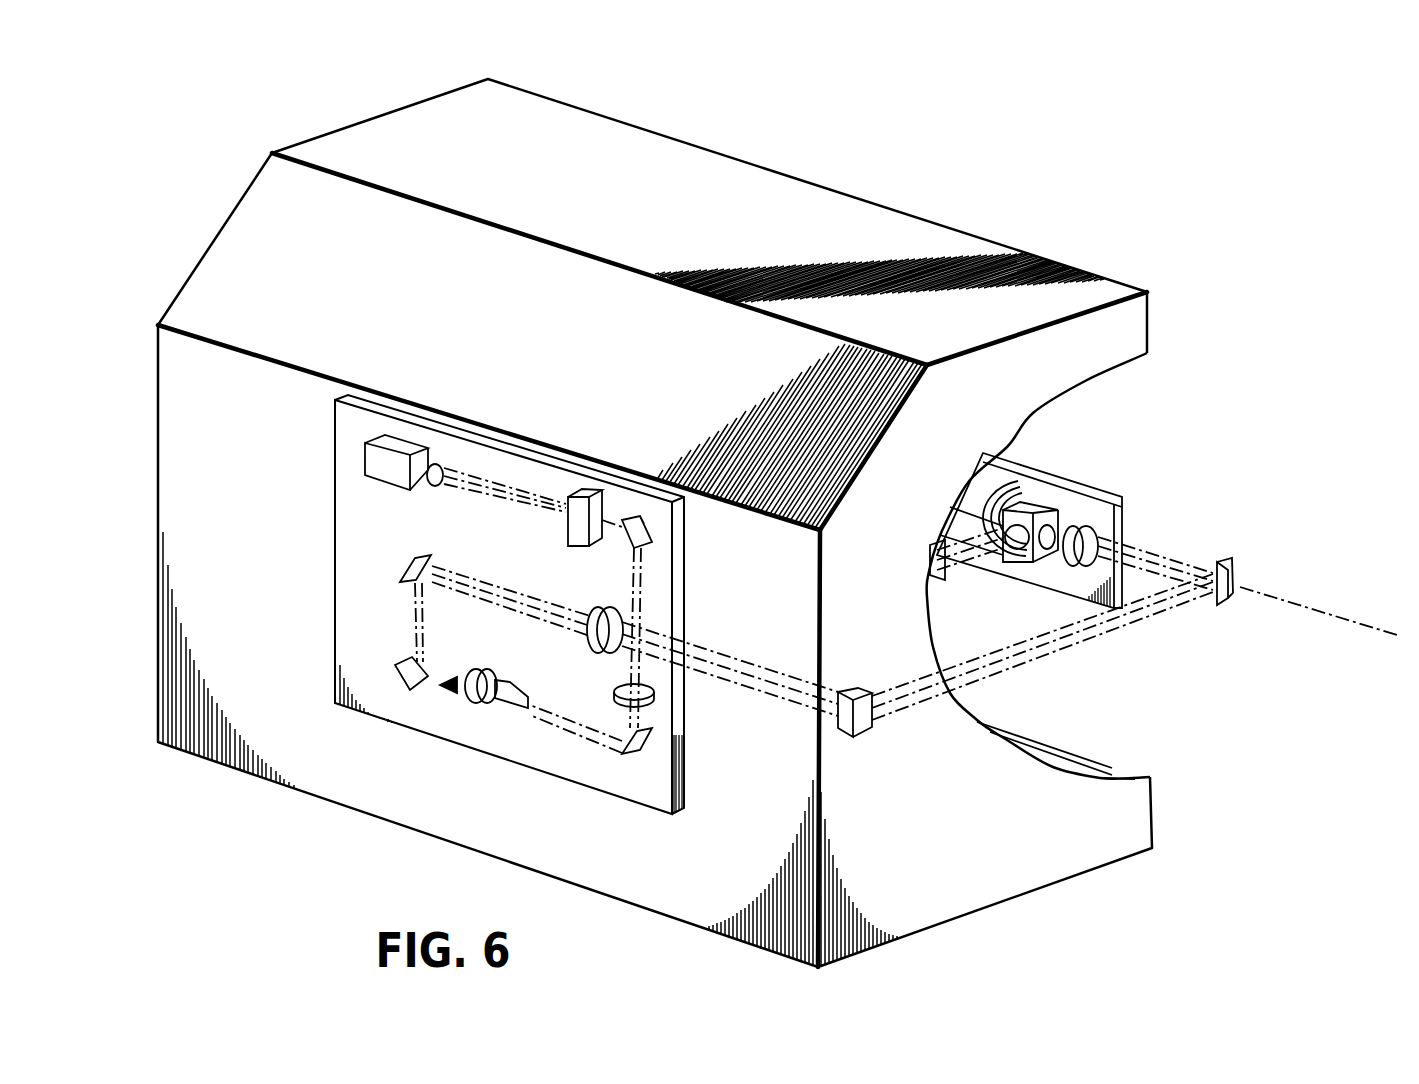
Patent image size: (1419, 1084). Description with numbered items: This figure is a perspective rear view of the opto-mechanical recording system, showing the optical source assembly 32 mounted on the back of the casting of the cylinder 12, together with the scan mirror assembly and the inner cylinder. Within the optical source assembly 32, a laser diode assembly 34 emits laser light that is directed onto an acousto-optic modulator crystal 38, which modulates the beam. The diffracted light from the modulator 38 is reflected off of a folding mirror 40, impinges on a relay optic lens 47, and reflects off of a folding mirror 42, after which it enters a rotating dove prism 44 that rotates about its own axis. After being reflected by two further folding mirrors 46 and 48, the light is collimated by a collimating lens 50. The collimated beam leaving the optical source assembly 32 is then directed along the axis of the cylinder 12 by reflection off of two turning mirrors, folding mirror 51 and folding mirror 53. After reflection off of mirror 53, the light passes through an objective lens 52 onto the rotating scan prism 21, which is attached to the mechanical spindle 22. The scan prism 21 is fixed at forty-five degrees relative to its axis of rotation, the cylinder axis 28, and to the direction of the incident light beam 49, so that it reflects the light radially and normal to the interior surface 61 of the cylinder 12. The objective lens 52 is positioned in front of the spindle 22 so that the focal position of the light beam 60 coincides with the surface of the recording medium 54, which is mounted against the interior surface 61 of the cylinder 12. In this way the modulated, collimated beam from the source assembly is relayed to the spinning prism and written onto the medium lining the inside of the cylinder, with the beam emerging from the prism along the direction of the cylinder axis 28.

The cylinder 12 is at (1095, 345).
The rotating scan prism 21 is at (1035, 506).
The mechanical spindle 22 is at (993, 474).
The cylinder axis 28 is at (1347, 624).
The optical source assembly 32 is at (316, 520).
The laser diode assembly 34 is at (365, 457).
The acousto-optic modulator crystal 38 is at (572, 492).
The folding mirror 40 is at (650, 517).
The folding mirror 42 is at (638, 745).
The rotating dove prism 44 is at (460, 693).
The folding mirror 46 is at (400, 666).
The relay optic lens 47 is at (650, 702).
The folding mirror 48 is at (404, 565).
The light beam 49 is at (1175, 549).
The collimating lens 50 is at (595, 596).
The folding mirror 51 is at (866, 732).
The objective lens 52 is at (1083, 529).
The folding mirror 53 is at (1238, 568).
The recording medium 54 is at (1027, 748).
The light beam 60 is at (940, 567).
The interior surface 61 is at (1125, 773).